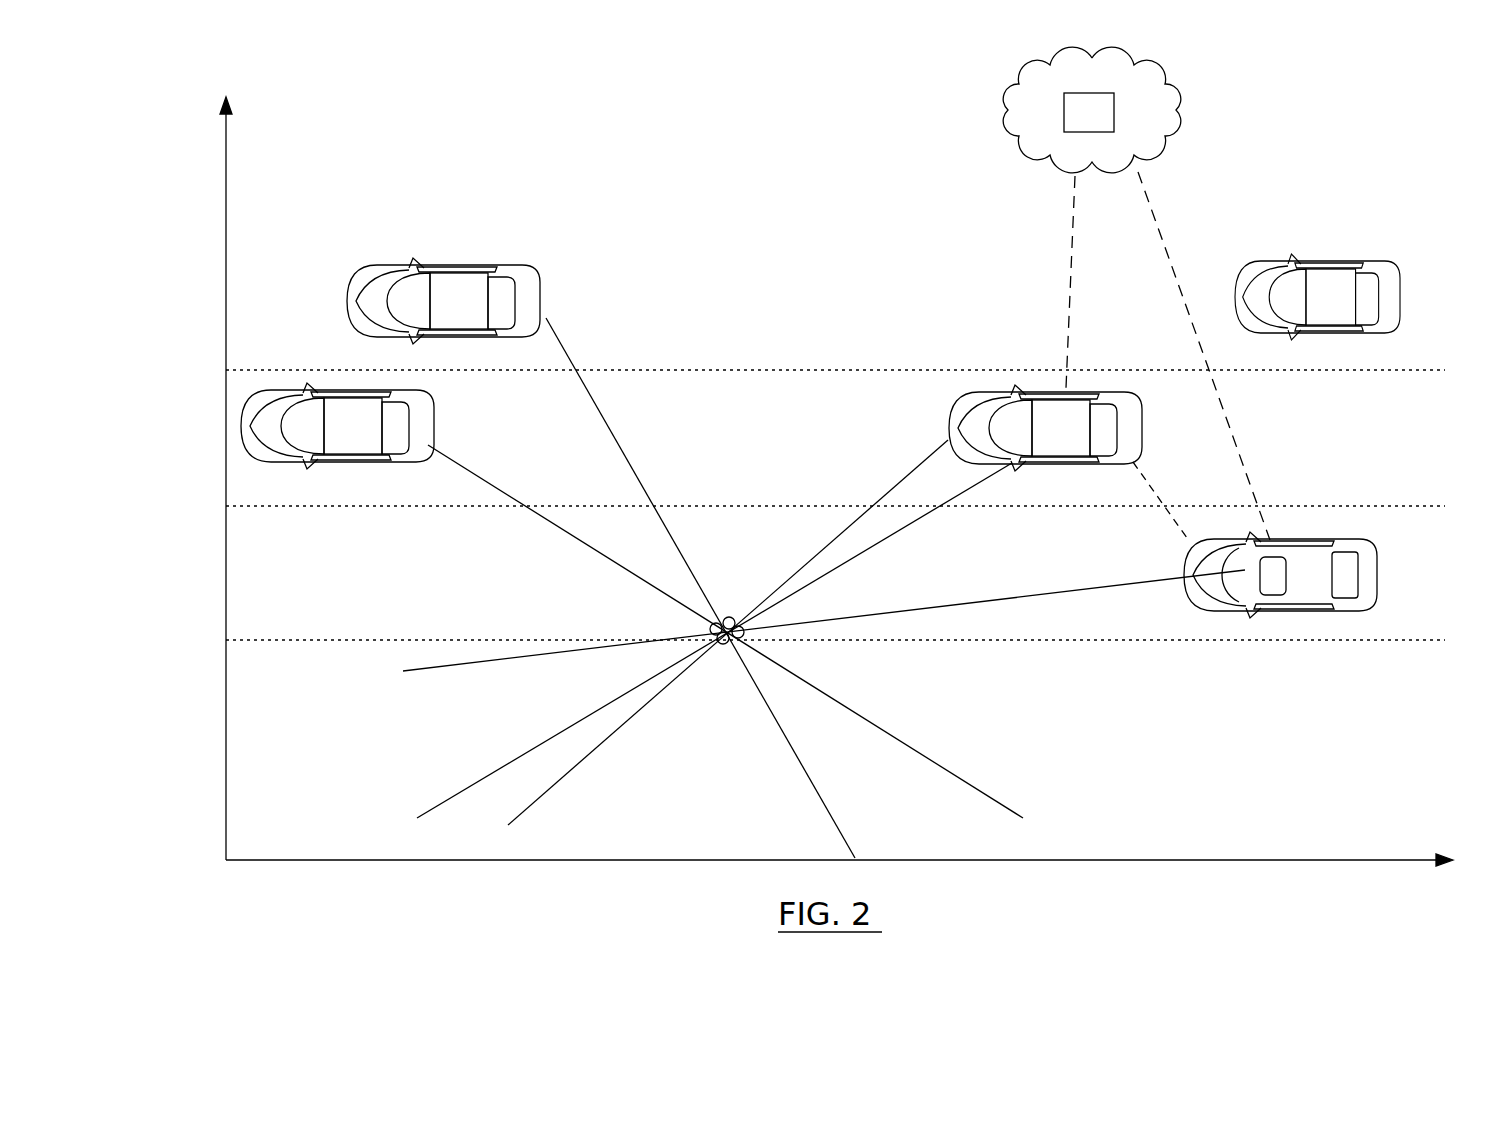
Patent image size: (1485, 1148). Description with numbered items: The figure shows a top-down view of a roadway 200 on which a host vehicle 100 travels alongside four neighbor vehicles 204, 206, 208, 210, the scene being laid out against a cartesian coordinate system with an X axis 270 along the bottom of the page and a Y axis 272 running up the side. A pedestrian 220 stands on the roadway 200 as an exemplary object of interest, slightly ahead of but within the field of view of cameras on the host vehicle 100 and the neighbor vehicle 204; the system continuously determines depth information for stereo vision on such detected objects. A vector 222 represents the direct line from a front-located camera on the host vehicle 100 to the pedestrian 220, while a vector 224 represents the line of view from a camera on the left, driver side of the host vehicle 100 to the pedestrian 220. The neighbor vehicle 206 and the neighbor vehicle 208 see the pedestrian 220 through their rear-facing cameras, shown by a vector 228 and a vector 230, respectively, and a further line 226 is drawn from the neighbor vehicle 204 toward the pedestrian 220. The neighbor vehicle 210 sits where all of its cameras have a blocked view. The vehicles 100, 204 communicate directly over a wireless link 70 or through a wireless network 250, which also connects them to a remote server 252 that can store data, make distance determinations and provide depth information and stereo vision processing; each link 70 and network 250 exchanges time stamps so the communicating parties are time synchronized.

The roadway 200 is at (688, 176).
The host vehicle 100 is at (1000, 393).
The direct wireless link 70 is at (1145, 484).
The neighbor vehicle 204 is at (1207, 607).
The neighbor vehicle 206 is at (530, 266).
The neighbor vehicle 208 is at (417, 413).
The neighbor vehicle 210 is at (1342, 258).
The pedestrian 220 is at (727, 645).
The vector 222 is at (842, 530).
The vector 224 is at (905, 527).
The third trajectory line 226 is at (1000, 607).
The vector 228 is at (560, 335).
The vector 230 is at (470, 474).
The wireless network 250 is at (1175, 164).
The remote server 252 is at (1060, 112).
The X axis 270 is at (1388, 861).
The Y axis 272 is at (225, 175).